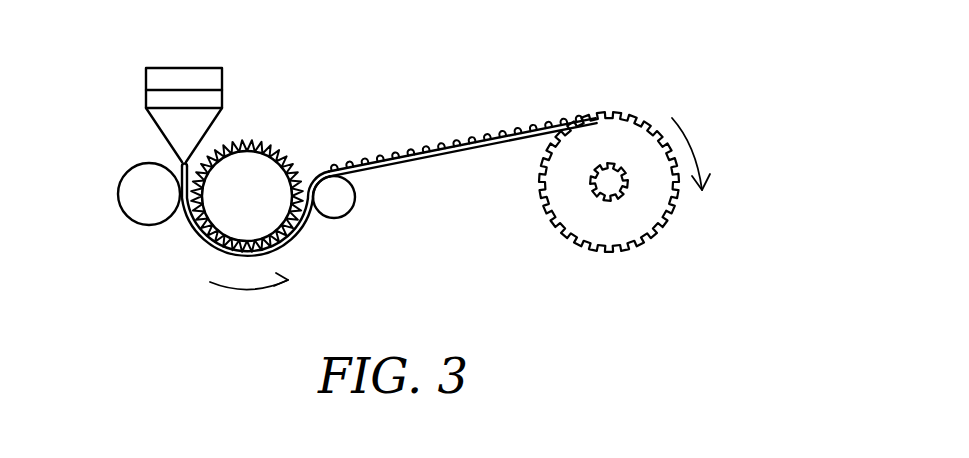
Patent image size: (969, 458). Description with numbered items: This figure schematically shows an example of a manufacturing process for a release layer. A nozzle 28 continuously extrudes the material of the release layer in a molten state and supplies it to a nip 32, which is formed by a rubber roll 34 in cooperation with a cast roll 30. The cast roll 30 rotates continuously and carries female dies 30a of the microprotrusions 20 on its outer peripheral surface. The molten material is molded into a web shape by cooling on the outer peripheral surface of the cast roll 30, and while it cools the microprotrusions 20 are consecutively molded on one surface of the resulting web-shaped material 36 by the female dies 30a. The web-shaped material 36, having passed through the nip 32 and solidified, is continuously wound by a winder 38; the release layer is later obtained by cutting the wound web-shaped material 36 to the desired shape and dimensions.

The microprotrusions 20 is at (480, 137).
The nozzle 28 is at (145, 95).
The cast roll 30 is at (291, 140).
The female dies 30a is at (287, 166).
The nip 32 is at (167, 243).
The rubber roll 34 is at (120, 204).
The web-shaped material 36 is at (447, 157).
The winder 38 is at (610, 187).